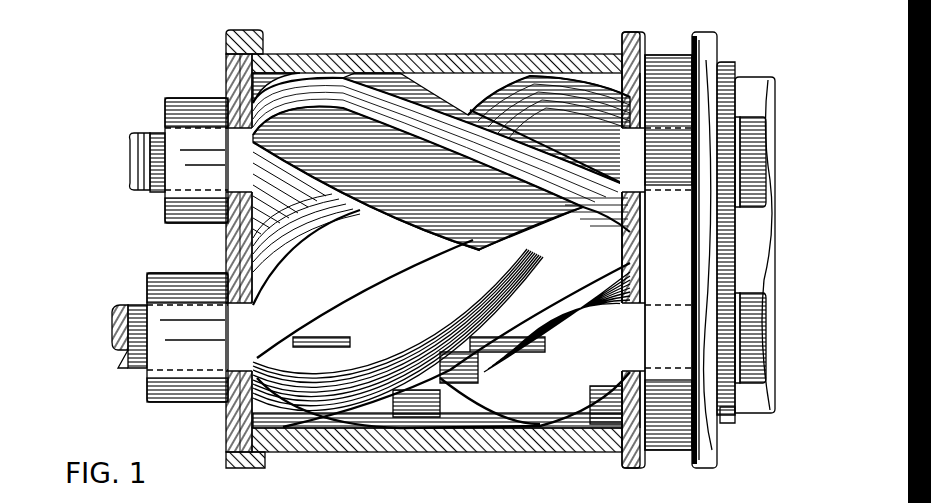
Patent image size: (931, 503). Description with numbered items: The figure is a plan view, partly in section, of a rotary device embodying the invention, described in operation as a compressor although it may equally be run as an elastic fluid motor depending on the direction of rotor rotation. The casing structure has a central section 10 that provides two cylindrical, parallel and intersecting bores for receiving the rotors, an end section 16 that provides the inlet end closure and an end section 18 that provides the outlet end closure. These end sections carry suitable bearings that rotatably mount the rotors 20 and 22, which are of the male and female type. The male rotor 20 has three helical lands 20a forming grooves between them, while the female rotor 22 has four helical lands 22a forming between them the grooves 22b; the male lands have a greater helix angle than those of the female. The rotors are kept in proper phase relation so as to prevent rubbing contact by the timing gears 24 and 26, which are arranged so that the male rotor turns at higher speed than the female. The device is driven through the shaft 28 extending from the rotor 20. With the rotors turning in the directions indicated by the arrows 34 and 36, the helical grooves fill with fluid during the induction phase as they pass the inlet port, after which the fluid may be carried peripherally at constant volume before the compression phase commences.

The central section 10 is at (437, 54).
The end section 16 is at (663, 50).
The end section 18 is at (226, 58).
The rotor 20 is at (398, 356).
The helical lands 20a is at (456, 345).
The rotor 22 is at (441, 161).
The helical lands 22a is at (554, 224).
The grooves 22b is at (549, 107).
The timing gear 24 is at (732, 416).
The timing gear 26 is at (724, 80).
The shaft 28 is at (118, 366).
The arrow 34 is at (319, 268).
The arrow 36 is at (272, 182).